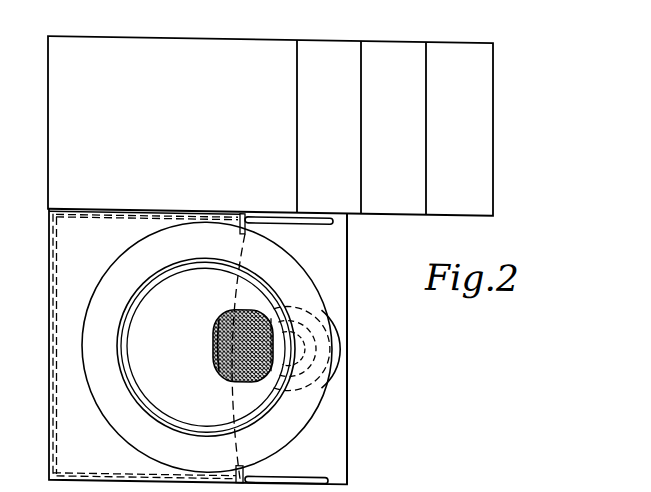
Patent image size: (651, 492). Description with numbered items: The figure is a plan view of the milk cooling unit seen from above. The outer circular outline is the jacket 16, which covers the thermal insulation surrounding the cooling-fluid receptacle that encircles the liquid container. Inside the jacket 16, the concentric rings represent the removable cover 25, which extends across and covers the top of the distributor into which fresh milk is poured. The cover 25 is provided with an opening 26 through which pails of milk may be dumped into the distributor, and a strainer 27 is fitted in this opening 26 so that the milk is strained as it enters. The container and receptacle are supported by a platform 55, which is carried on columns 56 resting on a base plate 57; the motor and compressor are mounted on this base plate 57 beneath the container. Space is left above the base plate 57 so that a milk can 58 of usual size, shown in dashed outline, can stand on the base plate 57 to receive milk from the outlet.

The jacket 16 is at (110, 269).
The removable cover 25 is at (206, 347).
The opening 26 is at (213, 319).
The strainer 27 is at (226, 362).
The platform 55 is at (68, 228).
The columns 56 is at (245, 466).
The base plate 57 is at (344, 438).
The milk can 58 is at (337, 338).